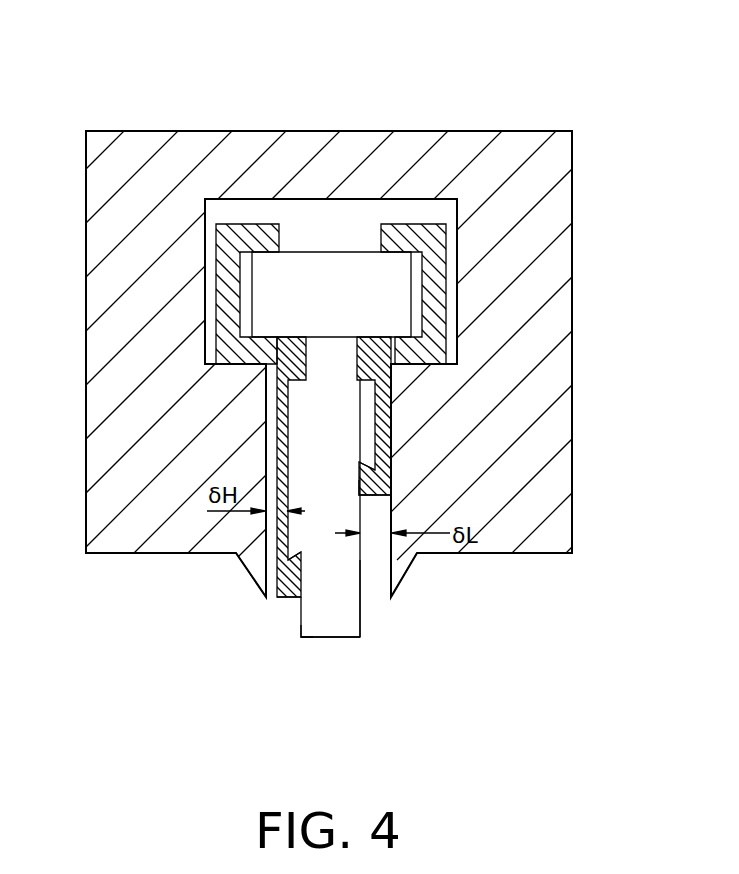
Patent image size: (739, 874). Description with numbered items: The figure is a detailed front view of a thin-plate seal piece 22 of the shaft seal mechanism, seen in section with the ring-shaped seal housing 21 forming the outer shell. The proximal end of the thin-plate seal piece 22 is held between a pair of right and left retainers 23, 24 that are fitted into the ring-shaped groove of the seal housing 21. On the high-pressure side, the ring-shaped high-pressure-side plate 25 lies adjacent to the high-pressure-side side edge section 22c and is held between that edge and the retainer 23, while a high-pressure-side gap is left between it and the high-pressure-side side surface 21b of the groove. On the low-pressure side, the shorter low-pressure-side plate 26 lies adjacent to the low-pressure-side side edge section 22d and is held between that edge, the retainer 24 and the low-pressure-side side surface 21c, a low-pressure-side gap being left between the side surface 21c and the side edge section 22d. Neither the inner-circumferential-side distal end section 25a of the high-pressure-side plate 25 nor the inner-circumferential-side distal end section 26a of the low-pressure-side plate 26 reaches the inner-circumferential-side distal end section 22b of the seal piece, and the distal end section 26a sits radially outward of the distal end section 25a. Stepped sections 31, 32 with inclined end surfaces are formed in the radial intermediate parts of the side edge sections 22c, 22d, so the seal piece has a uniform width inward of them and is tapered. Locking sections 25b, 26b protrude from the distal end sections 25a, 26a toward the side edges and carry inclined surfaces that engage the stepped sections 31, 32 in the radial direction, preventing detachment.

The seal housing 21 is at (202, 131).
The high-pressure-side side surface 21b is at (268, 444).
The low-pressure-side side surface 21c is at (382, 580).
The thin-plate seal piece 22 is at (341, 252).
The inner-circumferential-side distal end section 22b is at (336, 638).
The high-pressure-side side edge section 22c is at (299, 636).
The low-pressure-side side edge section 22d is at (361, 627).
The retainer 23 is at (238, 222).
The retainer 24 is at (440, 222).
The high-pressure-side plate 25 is at (276, 403).
The inner-circumferential-side distal end section 25a is at (283, 598).
The locking section 25b is at (292, 598).
The low-pressure-side plate 26 is at (393, 410).
The inner-circumferential-side distal end section 26a is at (392, 513).
The locking section 26b is at (385, 497).
The stepped section 31 is at (288, 558).
The stepped section 32 is at (372, 465).